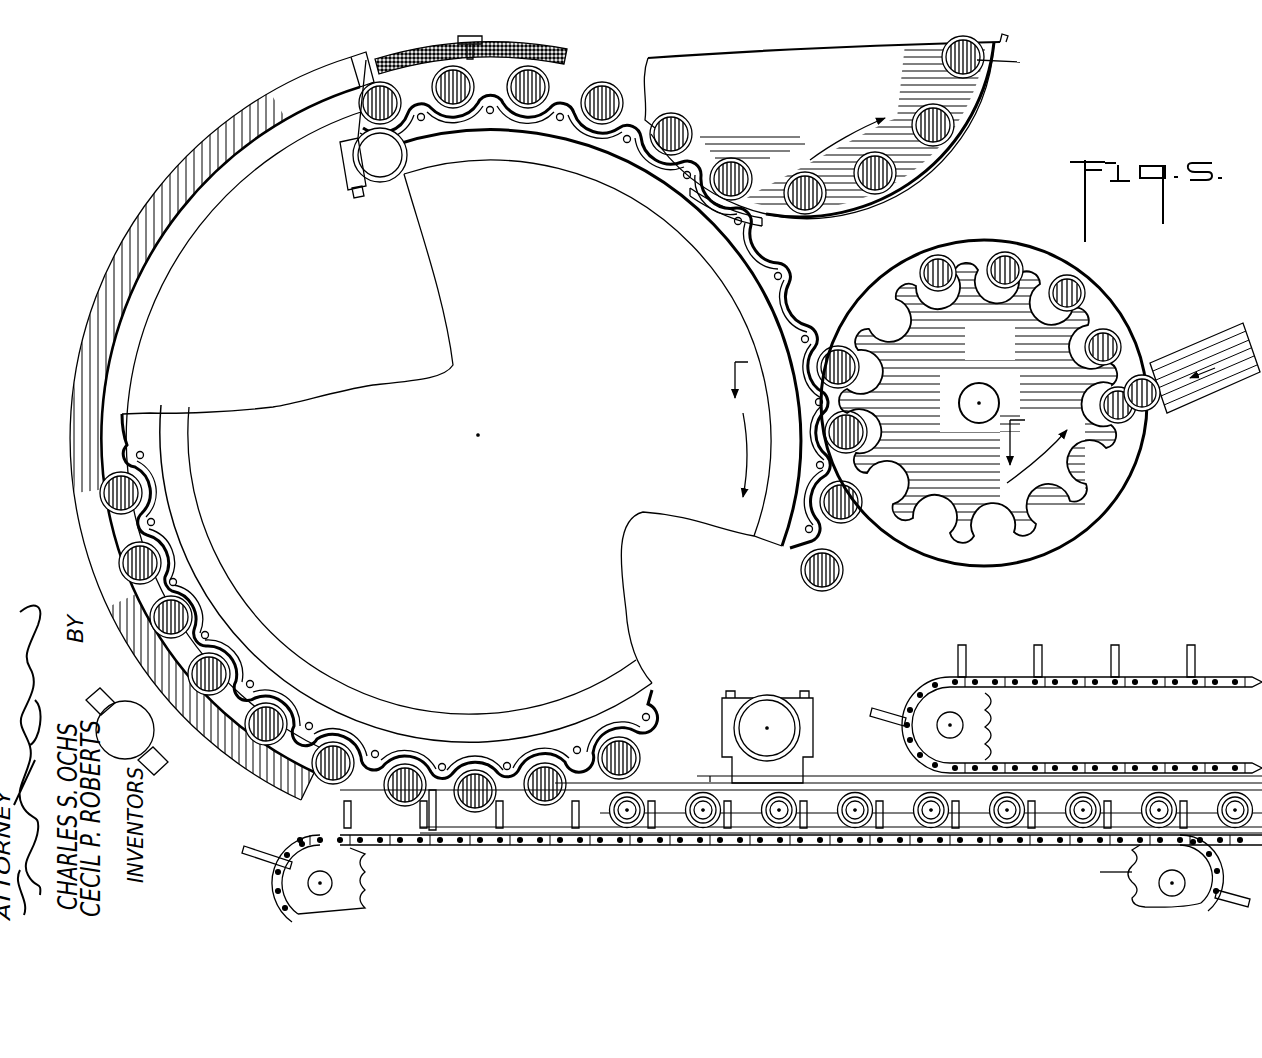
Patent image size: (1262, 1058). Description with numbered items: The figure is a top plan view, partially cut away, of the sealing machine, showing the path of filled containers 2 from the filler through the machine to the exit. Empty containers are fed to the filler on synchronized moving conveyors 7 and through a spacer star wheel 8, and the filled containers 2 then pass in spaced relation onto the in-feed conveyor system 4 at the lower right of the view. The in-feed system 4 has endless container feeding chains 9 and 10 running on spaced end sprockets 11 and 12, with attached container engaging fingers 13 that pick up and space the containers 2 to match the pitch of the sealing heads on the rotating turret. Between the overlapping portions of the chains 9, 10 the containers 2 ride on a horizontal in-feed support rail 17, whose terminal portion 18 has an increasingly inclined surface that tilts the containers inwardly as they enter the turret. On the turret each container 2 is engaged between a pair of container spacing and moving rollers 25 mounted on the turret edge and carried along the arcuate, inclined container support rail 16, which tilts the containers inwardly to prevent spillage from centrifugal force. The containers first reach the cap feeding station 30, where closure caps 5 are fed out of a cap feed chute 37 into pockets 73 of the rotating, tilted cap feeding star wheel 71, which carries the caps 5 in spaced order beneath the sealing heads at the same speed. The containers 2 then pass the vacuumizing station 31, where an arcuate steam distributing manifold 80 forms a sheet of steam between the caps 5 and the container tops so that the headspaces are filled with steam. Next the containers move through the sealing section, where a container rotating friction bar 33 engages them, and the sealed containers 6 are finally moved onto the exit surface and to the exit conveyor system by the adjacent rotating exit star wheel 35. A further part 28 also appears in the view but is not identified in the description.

The container 2 is at (400, 805).
The in-feed conveyor system 4 is at (1232, 668).
The closure cap 5 is at (1152, 408).
The sealed container 6 is at (700, 878).
The synchronized moving conveyor 7 is at (885, 429).
The spacer star wheel 8 is at (236, 530).
The endless container feeding chain 9 is at (1190, 762).
The endless container feeding chain 10 is at (333, 82).
The end sprocket 11 is at (412, 56).
The end sprocket 12 is at (345, 888).
The container engaging finger 13 is at (775, 147).
The container support rail 16 is at (237, 712).
The in-feed system support rail 17 is at (820, 795).
The terminal portion of the in-feed support rail 18 is at (440, 830).
The container spacing and moving roller 25 is at (255, 695).
The pipe fitting 28 is at (122, 712).
The cap feeding station 30 is at (1140, 326).
The vacuumizing station 31 is at (170, 160).
The container rotating friction bar 33 is at (560, 70).
The rotating exit star wheel 35 is at (862, 120).
The cap feed chute 37 is at (1212, 388).
The cap feeding star wheel 71 is at (983, 386).
The pocket 73 is at (1118, 478).
The steam distributing manifold 80 is at (150, 212).